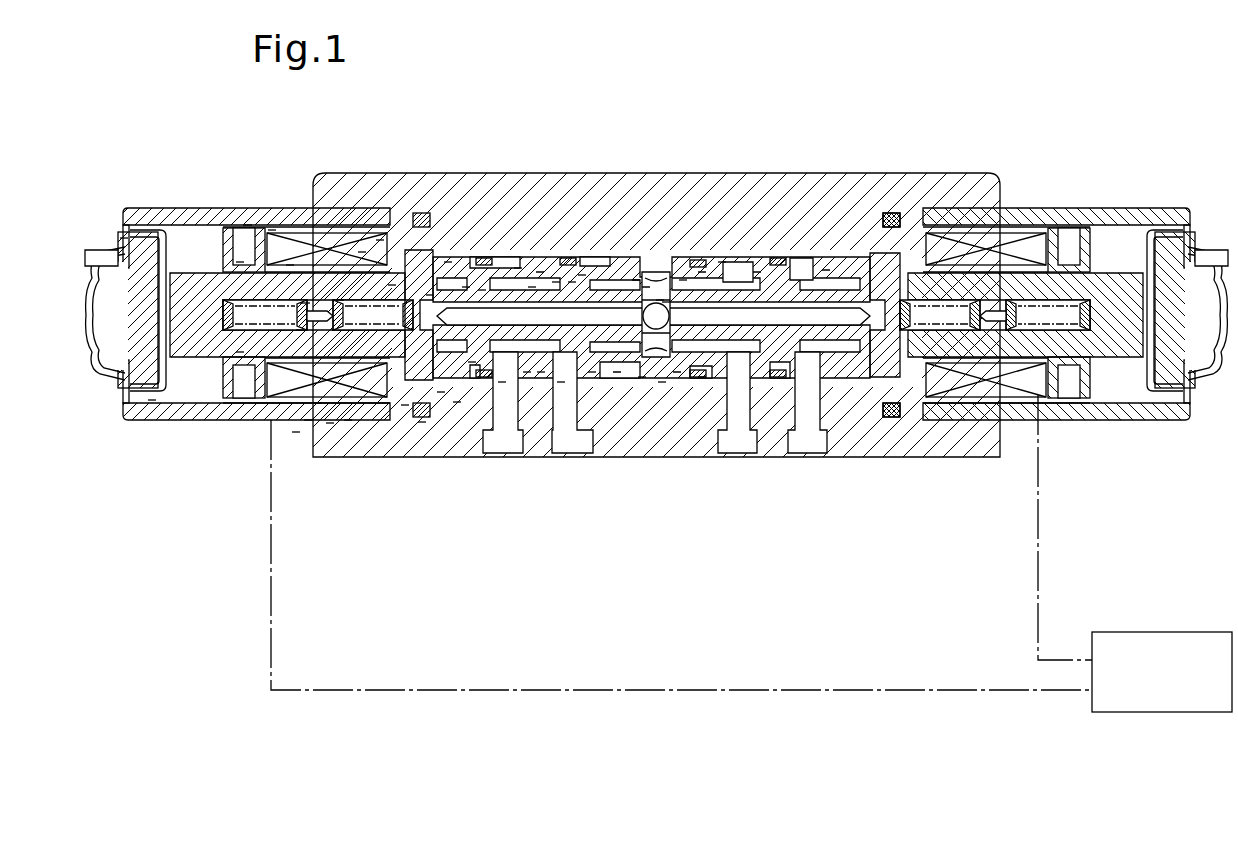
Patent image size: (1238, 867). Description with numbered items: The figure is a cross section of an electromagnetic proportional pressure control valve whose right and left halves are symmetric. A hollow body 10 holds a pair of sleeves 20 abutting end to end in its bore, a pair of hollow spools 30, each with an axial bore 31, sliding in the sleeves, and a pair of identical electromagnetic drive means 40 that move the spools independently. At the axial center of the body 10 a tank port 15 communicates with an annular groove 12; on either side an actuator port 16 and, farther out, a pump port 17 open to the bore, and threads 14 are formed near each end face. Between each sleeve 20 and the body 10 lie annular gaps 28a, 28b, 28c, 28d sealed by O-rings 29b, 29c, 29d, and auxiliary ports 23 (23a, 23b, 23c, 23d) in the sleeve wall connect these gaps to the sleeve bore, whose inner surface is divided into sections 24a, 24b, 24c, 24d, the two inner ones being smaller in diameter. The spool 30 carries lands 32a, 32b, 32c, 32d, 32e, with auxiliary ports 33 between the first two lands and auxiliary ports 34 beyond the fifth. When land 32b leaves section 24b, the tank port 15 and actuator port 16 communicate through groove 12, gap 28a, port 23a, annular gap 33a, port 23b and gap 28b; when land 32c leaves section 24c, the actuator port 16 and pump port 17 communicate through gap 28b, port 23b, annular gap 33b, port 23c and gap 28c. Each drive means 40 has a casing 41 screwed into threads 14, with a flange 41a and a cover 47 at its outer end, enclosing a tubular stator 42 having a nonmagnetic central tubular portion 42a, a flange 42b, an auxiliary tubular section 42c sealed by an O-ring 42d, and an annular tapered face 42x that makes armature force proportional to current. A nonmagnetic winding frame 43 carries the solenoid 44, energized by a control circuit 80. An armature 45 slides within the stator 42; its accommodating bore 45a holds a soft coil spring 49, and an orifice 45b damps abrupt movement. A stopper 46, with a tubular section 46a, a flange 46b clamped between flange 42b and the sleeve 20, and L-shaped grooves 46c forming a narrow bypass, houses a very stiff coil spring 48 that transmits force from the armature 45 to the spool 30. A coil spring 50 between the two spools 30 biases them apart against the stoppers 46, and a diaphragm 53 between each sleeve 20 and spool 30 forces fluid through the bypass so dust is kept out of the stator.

The body 10 is at (862, 173).
The annular groove 12 is at (690, 298).
The threads 14 is at (296, 432).
The tank port 15 is at (662, 382).
The actuator port 16 is at (571, 430).
The pump port 17 is at (505, 430).
The sleeve 20 is at (636, 280).
The auxiliary ports 23 is at (666, 315).
The auxiliary port 23a is at (702, 272).
The auxiliary port 23b is at (592, 372).
The auxiliary port 23c is at (532, 287).
The auxiliary port 23d is at (466, 287).
The first section of inner peripheral surface 24a is at (657, 372).
The second section of inner peripheral surface 24b is at (642, 377).
The third section of inner peripheral surface 24c is at (527, 372).
The fourth section of inner peripheral surface 24d is at (472, 362).
The annular gap 28a is at (683, 280).
The annular gap 28b is at (582, 275).
The annular gap 28c is at (518, 268).
The annular gap 28d is at (448, 262).
The O-ring 29b is at (660, 300).
The O-ring 29c is at (572, 282).
The O-ring 29d is at (482, 290).
The spool 30 is at (540, 272).
The axial bore 31 is at (596, 292).
The first land 32a is at (702, 377).
The second land 32b is at (561, 382).
The third land 32c is at (541, 372).
The fourth land 32d is at (502, 382).
The fifth land 32e is at (457, 402).
The auxiliary ports 33 is at (666, 302).
The annular gap 33a is at (646, 287).
The annular gap 33b is at (556, 282).
The auxiliary ports 34 is at (441, 392).
The electromagnetic drive means 40 is at (214, 207).
The casing 41 is at (240, 262).
The flange 41a is at (124, 238).
The stator 42 is at (247, 227).
The central tubular portion 42a is at (308, 420).
The flange 42b is at (348, 420).
The auxiliary tubular section 42c is at (382, 403).
The O-ring 42d is at (405, 405).
The annular tapered face 42x is at (330, 423).
The winding frame 43 is at (272, 230).
The solenoid 44 is at (305, 303).
The armature 45 is at (290, 265).
The accommodating bore 45a is at (300, 330).
The orifice 45b is at (340, 300).
The stopper 46 is at (380, 240).
The tubular section 46a is at (362, 252).
The flange 46b is at (430, 295).
The L-shaped grooves 46c is at (392, 285).
The cover 47 is at (152, 400).
The coil spring 48 is at (318, 403).
The coil spring 49 is at (240, 352).
The coil spring 50 is at (722, 262).
The diaphragm 53 is at (422, 422).
The control circuit 80 is at (1149, 632).